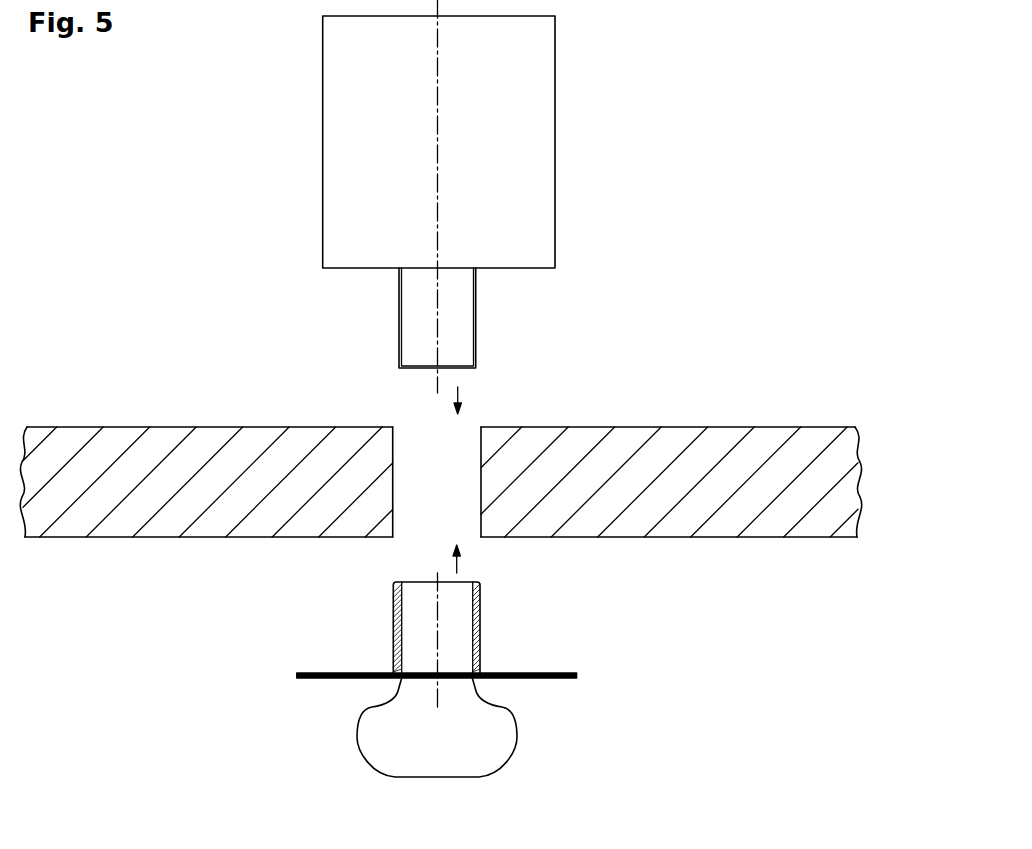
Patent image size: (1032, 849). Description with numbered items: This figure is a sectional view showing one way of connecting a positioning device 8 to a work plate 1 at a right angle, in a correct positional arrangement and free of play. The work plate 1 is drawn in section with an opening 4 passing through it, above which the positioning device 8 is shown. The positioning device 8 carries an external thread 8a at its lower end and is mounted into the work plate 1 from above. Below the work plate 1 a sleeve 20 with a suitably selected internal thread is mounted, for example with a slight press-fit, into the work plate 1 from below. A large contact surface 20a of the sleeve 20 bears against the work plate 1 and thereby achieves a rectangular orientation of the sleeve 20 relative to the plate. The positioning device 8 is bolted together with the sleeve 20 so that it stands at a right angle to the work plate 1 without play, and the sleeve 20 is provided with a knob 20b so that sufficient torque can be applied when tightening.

The work plate 1 is at (167, 435).
The hole in the plate 4 is at (420, 440).
The positioning device 8 is at (545, 72).
The external thread 8a is at (467, 346).
The sleeve 20 is at (458, 618).
The contact surface 20a is at (523, 672).
The knob 20b is at (355, 730).